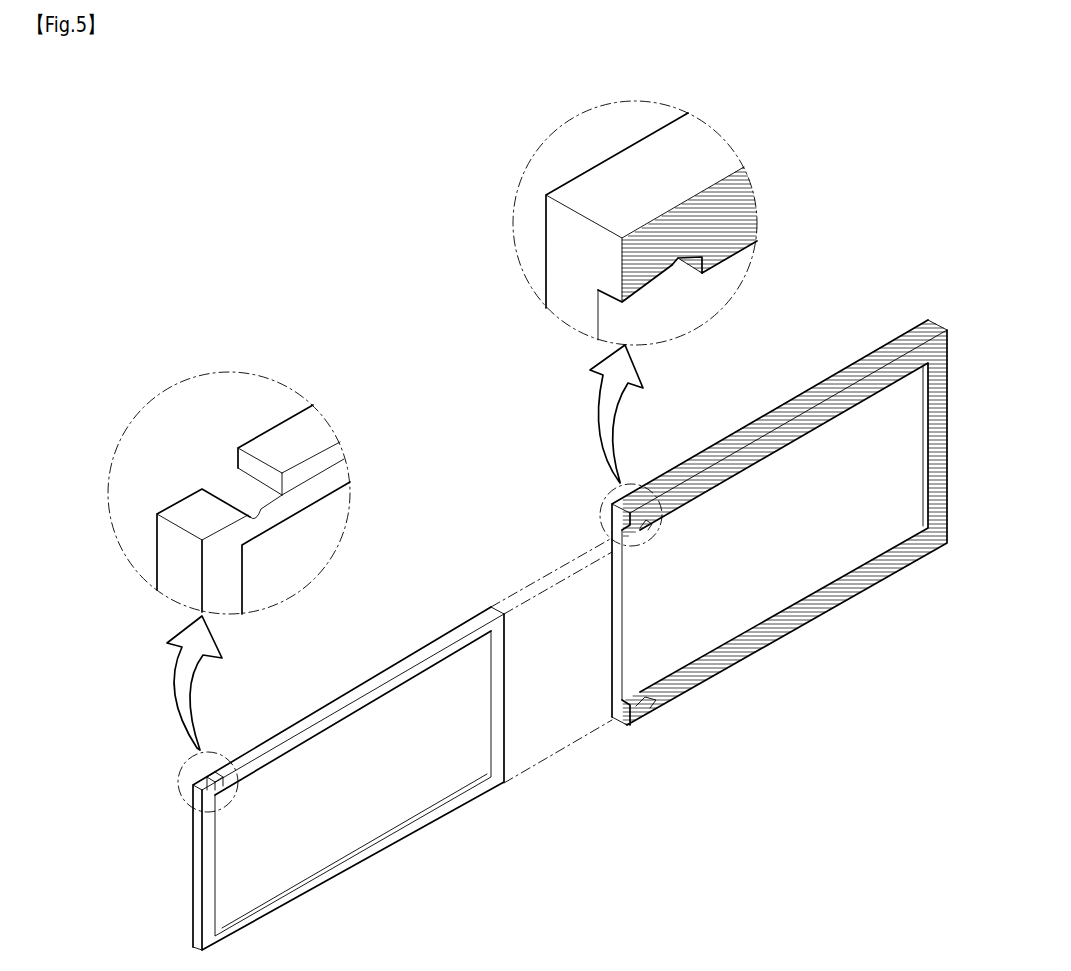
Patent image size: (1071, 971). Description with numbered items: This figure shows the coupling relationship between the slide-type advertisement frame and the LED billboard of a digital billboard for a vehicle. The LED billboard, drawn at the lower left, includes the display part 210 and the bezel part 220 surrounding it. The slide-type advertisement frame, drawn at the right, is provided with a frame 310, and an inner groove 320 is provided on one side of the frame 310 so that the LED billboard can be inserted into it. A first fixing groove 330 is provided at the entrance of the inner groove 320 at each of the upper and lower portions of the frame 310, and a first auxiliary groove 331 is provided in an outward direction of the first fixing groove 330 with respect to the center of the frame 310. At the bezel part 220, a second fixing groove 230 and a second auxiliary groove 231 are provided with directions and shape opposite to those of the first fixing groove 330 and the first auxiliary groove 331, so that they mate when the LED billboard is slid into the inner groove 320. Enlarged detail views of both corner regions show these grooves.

The display part 210 is at (333, 520).
The bezel part 220 is at (277, 442).
The second fixing groove 230 is at (170, 508).
The second auxiliary groove 231 is at (241, 497).
The frame 310 is at (568, 246).
The inner groove 320 is at (738, 593).
The first fixing groove 330 is at (662, 297).
The first auxiliary groove 331 is at (682, 264).